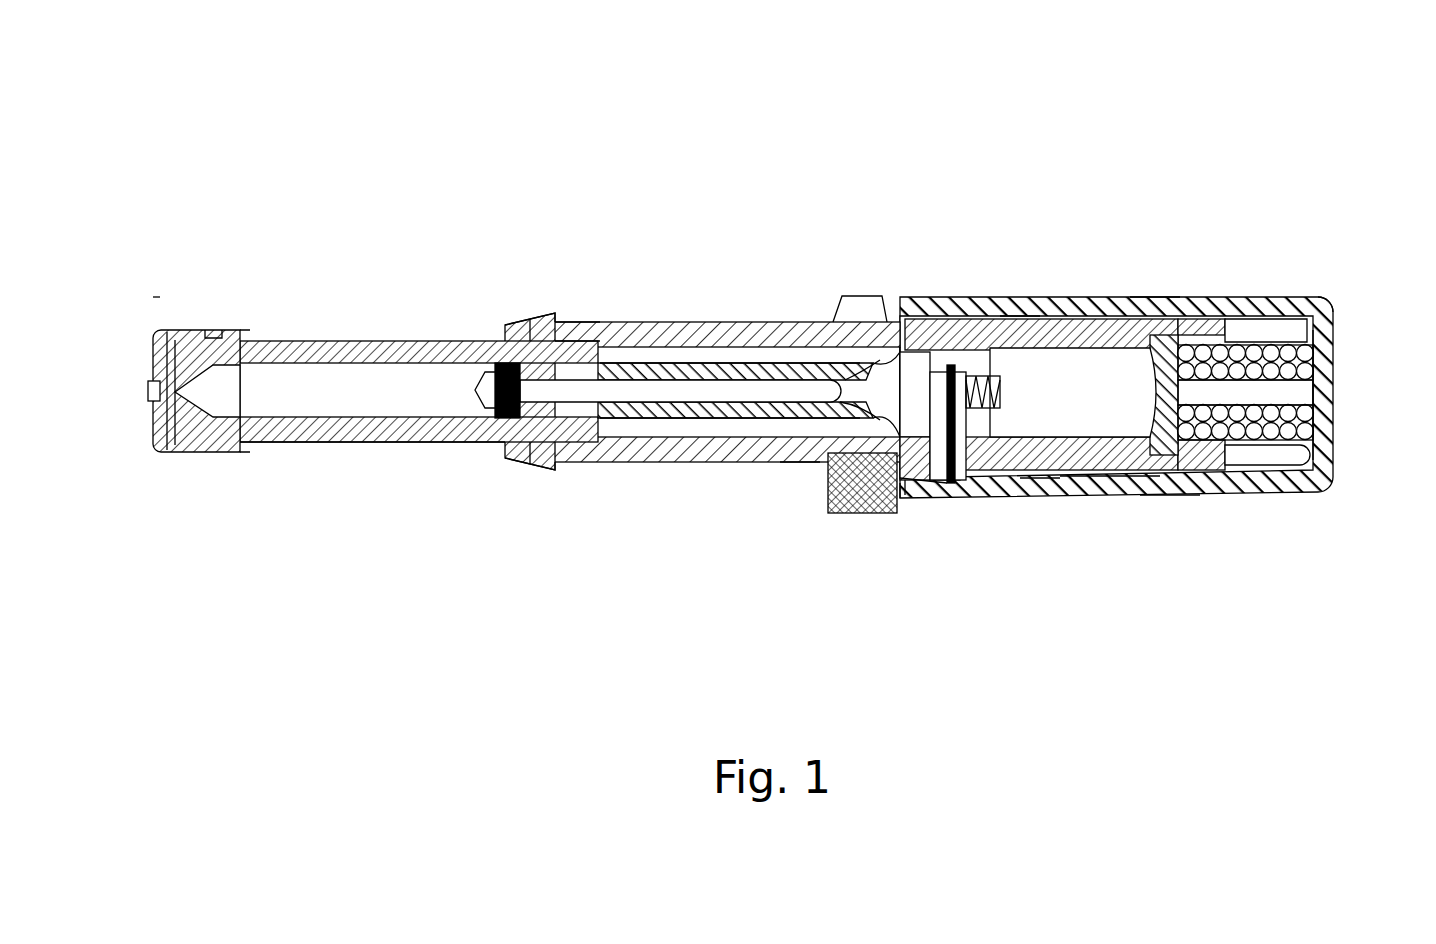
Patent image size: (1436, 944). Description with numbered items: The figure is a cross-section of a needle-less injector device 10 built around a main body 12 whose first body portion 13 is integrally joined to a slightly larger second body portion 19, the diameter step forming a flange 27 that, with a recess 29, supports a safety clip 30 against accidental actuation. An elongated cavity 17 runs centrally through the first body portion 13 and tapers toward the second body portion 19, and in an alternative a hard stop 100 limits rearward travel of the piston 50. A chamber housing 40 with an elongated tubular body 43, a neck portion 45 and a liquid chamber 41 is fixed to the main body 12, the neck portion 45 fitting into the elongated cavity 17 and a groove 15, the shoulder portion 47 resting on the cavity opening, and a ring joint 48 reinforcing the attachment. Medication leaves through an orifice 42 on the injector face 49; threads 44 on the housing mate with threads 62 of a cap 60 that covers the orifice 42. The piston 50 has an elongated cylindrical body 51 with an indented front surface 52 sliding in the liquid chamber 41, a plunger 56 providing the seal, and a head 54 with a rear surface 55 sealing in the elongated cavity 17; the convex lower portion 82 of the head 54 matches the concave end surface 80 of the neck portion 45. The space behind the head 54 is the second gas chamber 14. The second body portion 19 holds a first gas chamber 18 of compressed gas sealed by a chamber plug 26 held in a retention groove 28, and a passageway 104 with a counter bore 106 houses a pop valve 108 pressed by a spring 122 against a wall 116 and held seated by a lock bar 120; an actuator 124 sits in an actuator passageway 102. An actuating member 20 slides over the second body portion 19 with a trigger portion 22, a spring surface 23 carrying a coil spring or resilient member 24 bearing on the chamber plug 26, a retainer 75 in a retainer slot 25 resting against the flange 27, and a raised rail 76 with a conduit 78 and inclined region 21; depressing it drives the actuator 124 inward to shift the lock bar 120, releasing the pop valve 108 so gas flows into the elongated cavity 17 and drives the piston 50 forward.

The needle-less injector device 10 is at (718, 180).
The main body 12 is at (722, 472).
The first body portion 13 is at (750, 447).
The second gas chamber 14 is at (797, 463).
The groove 15 is at (567, 340).
The elongated cavity 17 is at (690, 420).
The first gas chamber 18 is at (1150, 298).
The second body portion 19 is at (1110, 492).
The actuating member 20 is at (1152, 480).
The inclined region 21 is at (1040, 476).
The trigger portion 22 is at (1317, 408).
The spring surface 23 is at (1300, 388).
The coil spring or resilient member 24 is at (1320, 300).
The retainer slot 25 is at (915, 360).
The chamber plug 26 is at (1193, 490).
The flange 27 is at (882, 511).
The retention groove 28 is at (1228, 320).
The recess 29 is at (800, 307).
The safety clip 30 is at (845, 514).
The chamber housing 40 is at (310, 458).
The liquid chamber 41 is at (378, 400).
The orifice 42 is at (160, 393).
The elongated tubular body 43 is at (423, 443).
The threads 44 is at (213, 338).
The neck portion 45 is at (588, 443).
The shoulder portion 47 is at (560, 322).
The ring joint 48 is at (508, 463).
The injector face 49 is at (174, 431).
The piston 50 is at (730, 362).
The elongated cylindrical body 51 is at (686, 358).
The indented front surface 52 is at (515, 325).
The head 54 is at (882, 352).
The rear surface 55 is at (902, 492).
The plunger 56 is at (492, 388).
The cap 60 is at (181, 453).
The threads 62 is at (165, 331).
The retainer 75 is at (945, 322).
The raised rail 76 is at (910, 486).
The conduit 78 is at (919, 486).
The end surface 80 is at (645, 364).
The lower portion 82 is at (843, 297).
The hard stop 100 is at (1005, 335).
The actuator passageway 102 is at (969, 472).
The passageway 104 is at (1107, 297).
The counter bore 106 is at (990, 470).
The pop valve 108 is at (1014, 392).
The wall 116 is at (1062, 470).
The lock bar 120 is at (1020, 297).
The spring 122 is at (1137, 297).
The actuator 124 is at (946, 478).